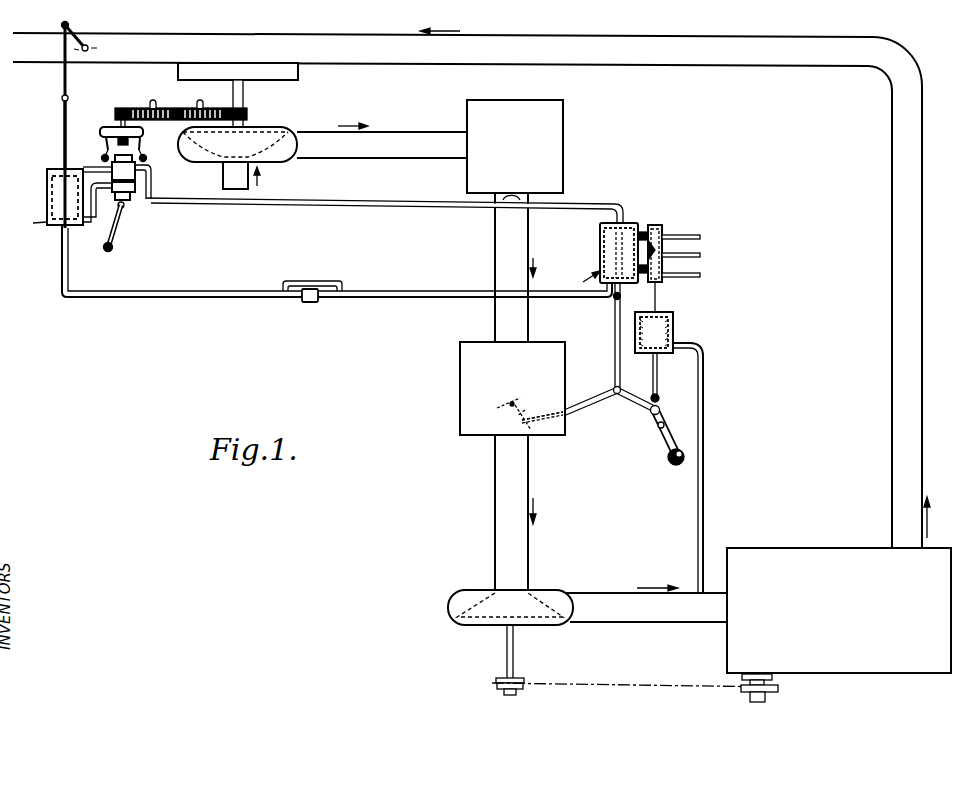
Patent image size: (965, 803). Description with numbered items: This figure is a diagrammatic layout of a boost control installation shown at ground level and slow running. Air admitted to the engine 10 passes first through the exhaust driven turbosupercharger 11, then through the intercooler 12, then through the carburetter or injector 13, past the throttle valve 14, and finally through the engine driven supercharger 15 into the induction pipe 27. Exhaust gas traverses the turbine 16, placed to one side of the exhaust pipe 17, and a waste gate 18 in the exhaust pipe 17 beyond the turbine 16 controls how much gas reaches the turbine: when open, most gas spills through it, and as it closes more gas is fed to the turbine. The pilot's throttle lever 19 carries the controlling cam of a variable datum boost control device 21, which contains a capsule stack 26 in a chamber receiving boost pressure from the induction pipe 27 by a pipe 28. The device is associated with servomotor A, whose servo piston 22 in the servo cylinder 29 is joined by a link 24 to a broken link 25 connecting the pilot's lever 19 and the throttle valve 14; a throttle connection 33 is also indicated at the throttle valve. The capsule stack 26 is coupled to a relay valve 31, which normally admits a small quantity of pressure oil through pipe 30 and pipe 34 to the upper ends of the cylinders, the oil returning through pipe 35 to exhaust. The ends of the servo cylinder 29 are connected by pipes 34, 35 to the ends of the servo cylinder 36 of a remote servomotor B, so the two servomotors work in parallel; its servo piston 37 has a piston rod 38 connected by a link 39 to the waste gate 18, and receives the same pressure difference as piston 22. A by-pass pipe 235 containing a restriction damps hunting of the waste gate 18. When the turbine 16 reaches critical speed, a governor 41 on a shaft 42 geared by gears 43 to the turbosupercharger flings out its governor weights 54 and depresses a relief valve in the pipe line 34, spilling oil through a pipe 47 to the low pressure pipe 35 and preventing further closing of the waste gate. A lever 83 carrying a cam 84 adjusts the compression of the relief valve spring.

The engine 10 is at (761, 548).
The exhaust driven turbosupercharger 11 is at (278, 159).
The intercooler 12 is at (466, 177).
The carburetter or injector 13 is at (460, 364).
The throttle valve 14 is at (500, 411).
The engine driven supercharger 15 is at (476, 628).
The turbine 16 is at (299, 71).
The exhaust pipe 17 is at (352, 33).
The waste gate 18 is at (92, 53).
The pilot's throttle lever 19 is at (667, 440).
The variable datum boost control device 21 is at (673, 319).
The servo piston 22 is at (602, 232).
The link 24 is at (615, 349).
The broken link 25 is at (612, 403).
The capsule stack 26 is at (673, 333).
The induction pipe 27 is at (598, 593).
The pipe 28 is at (703, 489).
The servo cylinder 29 is at (600, 258).
The pipe 30 is at (648, 226).
The relay valve 31 is at (665, 234).
The throttle connection 33 is at (542, 408).
The pipe 34 is at (344, 204).
The pipe 35 is at (164, 288).
The servo cylinder 36 is at (47, 191).
The servo piston 37 is at (57, 174).
The piston rod 38 is at (63, 118).
The link 39 is at (63, 78).
The governor 41 is at (144, 134).
The shaft 42 is at (116, 127).
The gears 43 is at (122, 108).
The pipe 47 is at (92, 227).
The governor weights 54 is at (101, 158).
The lever 83 is at (117, 236).
The cam 84 is at (124, 206).
The pipe 235 is at (322, 280).